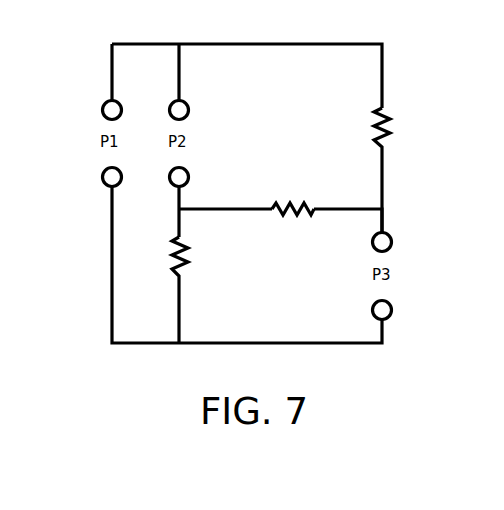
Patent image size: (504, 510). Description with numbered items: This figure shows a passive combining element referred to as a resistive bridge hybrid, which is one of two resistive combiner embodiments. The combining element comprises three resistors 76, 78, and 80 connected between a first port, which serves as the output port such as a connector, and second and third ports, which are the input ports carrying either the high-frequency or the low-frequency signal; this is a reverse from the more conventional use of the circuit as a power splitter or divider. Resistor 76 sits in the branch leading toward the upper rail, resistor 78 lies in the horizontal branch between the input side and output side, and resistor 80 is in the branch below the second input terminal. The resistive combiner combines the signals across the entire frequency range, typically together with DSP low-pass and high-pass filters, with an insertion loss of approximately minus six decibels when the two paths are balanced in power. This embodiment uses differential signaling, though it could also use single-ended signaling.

The resistor 76 is at (393, 110).
The resistor 78 is at (278, 200).
The resistor 80 is at (186, 240).